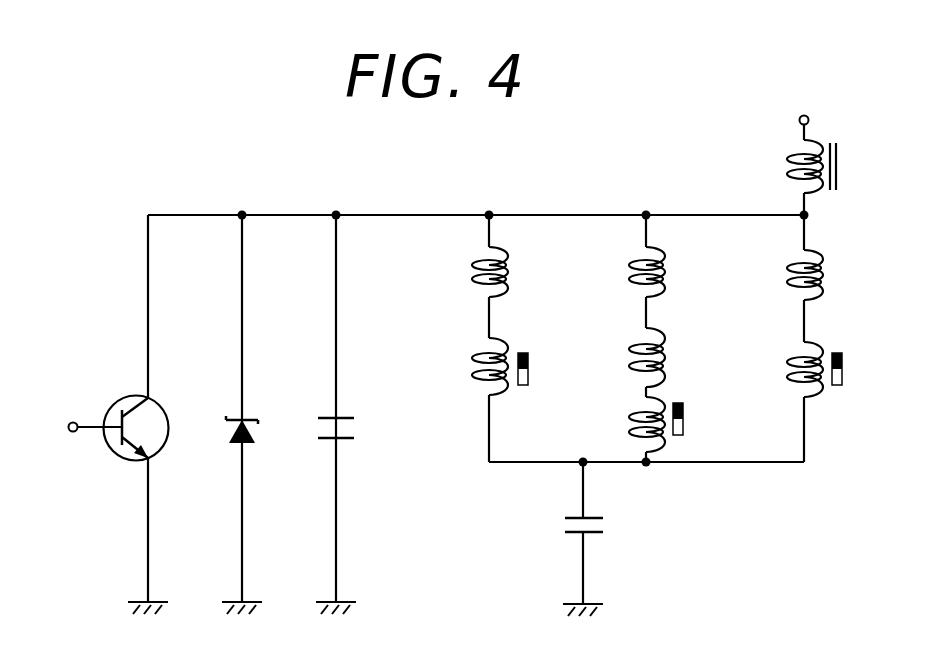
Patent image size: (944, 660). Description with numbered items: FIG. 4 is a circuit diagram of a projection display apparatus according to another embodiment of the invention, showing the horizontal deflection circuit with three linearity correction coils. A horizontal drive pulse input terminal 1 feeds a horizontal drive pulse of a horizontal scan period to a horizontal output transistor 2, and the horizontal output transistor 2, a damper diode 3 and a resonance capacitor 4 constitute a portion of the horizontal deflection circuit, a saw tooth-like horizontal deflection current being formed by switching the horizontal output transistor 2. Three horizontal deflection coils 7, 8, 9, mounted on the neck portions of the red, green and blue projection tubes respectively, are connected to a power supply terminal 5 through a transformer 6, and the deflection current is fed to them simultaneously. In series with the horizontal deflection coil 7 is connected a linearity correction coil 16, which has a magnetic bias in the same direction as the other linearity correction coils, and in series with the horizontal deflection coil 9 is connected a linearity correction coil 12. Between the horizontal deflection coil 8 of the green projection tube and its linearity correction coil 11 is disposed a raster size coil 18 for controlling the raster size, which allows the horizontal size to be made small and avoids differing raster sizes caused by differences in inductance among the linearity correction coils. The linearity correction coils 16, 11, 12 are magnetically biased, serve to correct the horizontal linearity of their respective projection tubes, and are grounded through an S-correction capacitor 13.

The horizontal drive pulse input terminal 1 is at (76, 420).
The horizontal output transistor 2 is at (156, 400).
The damper diode 3 is at (253, 412).
The resonance capacitor 4 is at (345, 415).
The power supply terminal 5 is at (798, 122).
The transformer 6 is at (842, 170).
The horizontal deflection coil 7 is at (460, 276).
The horizontal deflection coil 8 is at (618, 276).
The horizontal deflection coil 9 is at (780, 276).
The linearity correction coil 11 is at (624, 425).
The linearity correction coil 12 is at (780, 373).
The S-correction capacitor 13 is at (562, 513).
The linearity correction coil 16 is at (472, 372).
The raster size coil 18 is at (624, 356).